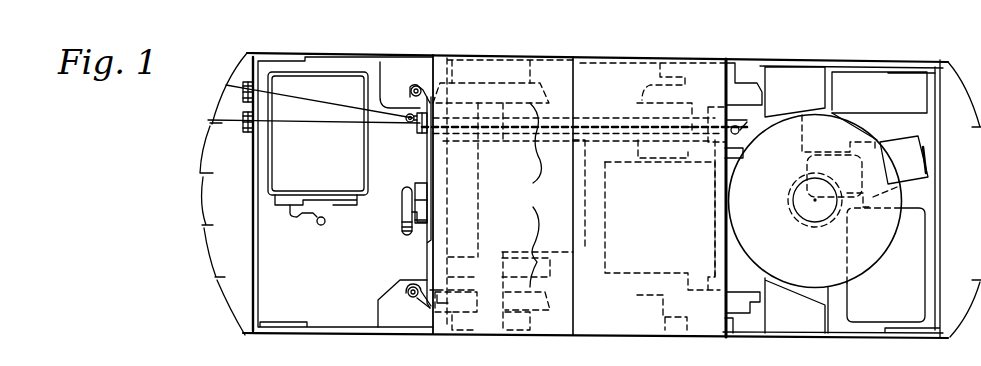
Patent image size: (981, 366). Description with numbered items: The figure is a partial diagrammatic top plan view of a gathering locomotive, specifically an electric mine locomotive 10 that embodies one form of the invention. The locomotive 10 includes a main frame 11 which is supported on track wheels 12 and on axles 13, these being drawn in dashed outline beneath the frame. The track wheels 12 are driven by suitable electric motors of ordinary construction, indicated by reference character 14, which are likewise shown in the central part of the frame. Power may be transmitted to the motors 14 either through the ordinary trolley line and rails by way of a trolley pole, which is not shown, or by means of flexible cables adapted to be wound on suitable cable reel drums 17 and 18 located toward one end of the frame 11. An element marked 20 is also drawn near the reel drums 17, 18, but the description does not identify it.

The electric mine locomotive 10 is at (492, 338).
The main frame 11 is at (347, 54).
The track wheels 12 is at (531, 195).
The axles 13 is at (506, 118).
The electric motors 14 is at (573, 253).
The cable reel drum 17 is at (868, 270).
The cable reel drum 18 is at (740, 88).
The switch box 20 is at (923, 185).